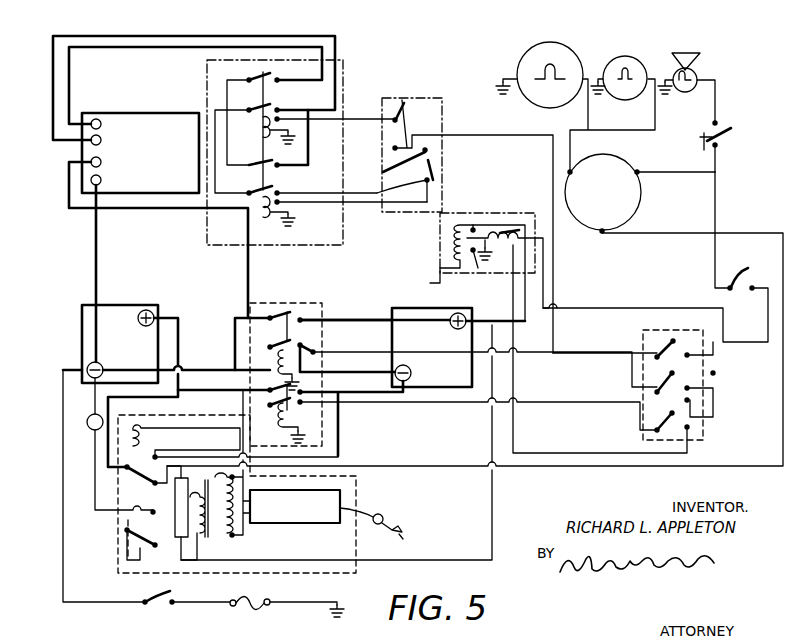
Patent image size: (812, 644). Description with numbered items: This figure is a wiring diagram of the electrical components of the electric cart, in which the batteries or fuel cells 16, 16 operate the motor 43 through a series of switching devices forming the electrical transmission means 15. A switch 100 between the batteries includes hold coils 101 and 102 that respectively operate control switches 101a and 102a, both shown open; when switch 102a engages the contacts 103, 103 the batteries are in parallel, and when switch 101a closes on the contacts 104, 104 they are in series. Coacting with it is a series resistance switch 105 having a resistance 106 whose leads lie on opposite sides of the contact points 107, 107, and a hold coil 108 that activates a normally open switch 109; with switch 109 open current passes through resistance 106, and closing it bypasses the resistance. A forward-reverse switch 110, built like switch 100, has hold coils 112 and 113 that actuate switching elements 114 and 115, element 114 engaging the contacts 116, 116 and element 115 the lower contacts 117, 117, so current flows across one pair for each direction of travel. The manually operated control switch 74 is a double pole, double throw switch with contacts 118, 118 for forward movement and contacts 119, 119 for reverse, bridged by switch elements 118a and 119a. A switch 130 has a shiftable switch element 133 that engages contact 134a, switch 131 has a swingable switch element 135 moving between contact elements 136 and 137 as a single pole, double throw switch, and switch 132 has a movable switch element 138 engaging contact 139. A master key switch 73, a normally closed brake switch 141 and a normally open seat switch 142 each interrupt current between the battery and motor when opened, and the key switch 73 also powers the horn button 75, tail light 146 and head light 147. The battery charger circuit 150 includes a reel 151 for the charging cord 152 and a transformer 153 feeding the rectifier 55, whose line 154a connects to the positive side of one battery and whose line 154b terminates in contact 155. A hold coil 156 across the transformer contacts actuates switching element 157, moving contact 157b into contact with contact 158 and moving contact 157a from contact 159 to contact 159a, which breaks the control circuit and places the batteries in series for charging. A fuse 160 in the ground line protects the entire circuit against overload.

The electrical transmission means 15 is at (655, 316).
The batteries or fuel cells 16 is at (124, 348).
The motor 43 is at (146, 112).
The rectifier 55 is at (205, 478).
The master key switch 73 is at (642, 180).
The manually operated control switch 74 is at (430, 92).
The horn button 75 is at (730, 128).
The switch 100 is at (333, 313).
The hold coil 101 is at (303, 406).
The control switch 101a is at (268, 393).
The hold coil 102 is at (268, 350).
The control switch 102a is at (283, 312).
The contacts 103 is at (305, 322).
The contacts 104 is at (303, 390).
The series resistance switch 105 is at (528, 205).
The resistance 106 is at (455, 243).
The contact points 107 is at (480, 228).
The hold coil 108 is at (520, 233).
The switch 109 is at (500, 243).
The forward-reverse switch 110 is at (348, 72).
The hold coil 112 is at (262, 128).
The hold coil 113 is at (280, 206).
The switching element 114 is at (266, 85).
The switching element 115 is at (248, 195).
The contacts 116 is at (249, 110).
The lower contacts 117 is at (272, 168).
The contacts 118 is at (384, 172).
The switch element 118a is at (432, 162).
The contacts 119 is at (403, 108).
The switch element 119a is at (392, 118).
The switch 130 is at (680, 345).
The switch 131 is at (682, 381).
The switch 132 is at (682, 420).
The shiftable switch element 133 is at (662, 350).
The contact 134a is at (690, 352).
The swingable switch element 135 is at (665, 383).
The contact element 136 is at (668, 412).
The contact element 137 is at (690, 399).
The movable switch element 138 is at (663, 428).
The contact 139 is at (690, 432).
The brake switch 141 is at (740, 258).
The seat switch 142 is at (150, 608).
The tail light 146 is at (618, 56).
The head light 147 is at (550, 42).
The battery charger circuit 150 is at (327, 580).
The reel 151 is at (310, 525).
The charging cord 152 is at (394, 524).
The transformer 153 is at (218, 530).
The line 154a is at (428, 560).
The line 154b is at (130, 556).
The contact 155 is at (125, 532).
The hold coil 156 is at (143, 440).
The switching element 157 is at (153, 480).
The switch contact 157a is at (125, 469).
The switching element 157b is at (142, 560).
The contact 158 is at (150, 514).
The contact 159 is at (152, 488).
The contact 159a is at (150, 456).
The fuse 160 is at (240, 606).